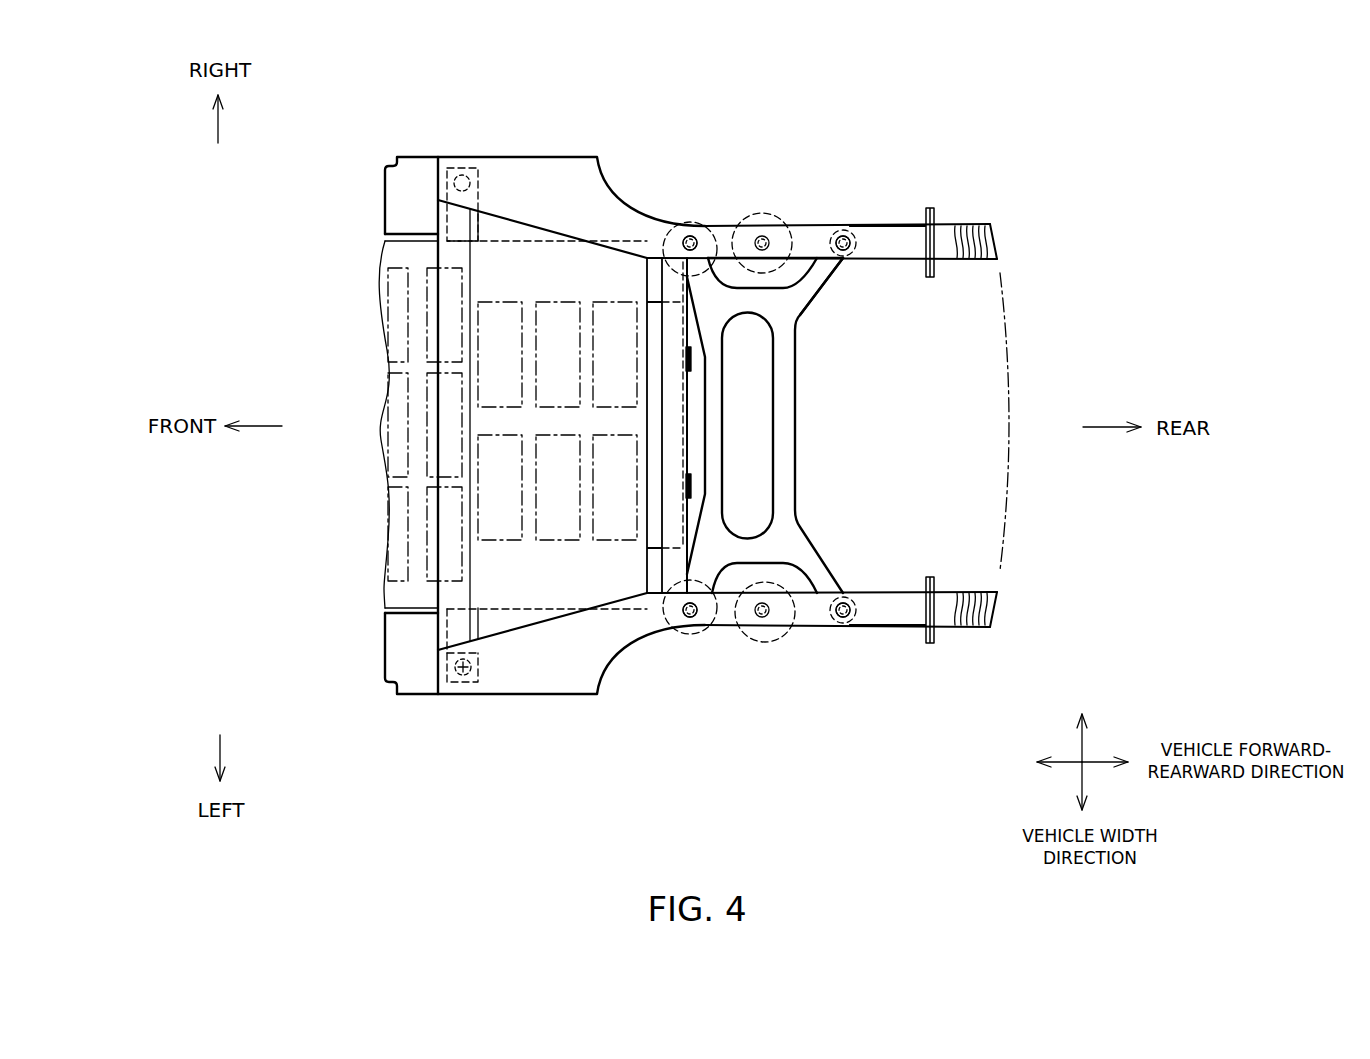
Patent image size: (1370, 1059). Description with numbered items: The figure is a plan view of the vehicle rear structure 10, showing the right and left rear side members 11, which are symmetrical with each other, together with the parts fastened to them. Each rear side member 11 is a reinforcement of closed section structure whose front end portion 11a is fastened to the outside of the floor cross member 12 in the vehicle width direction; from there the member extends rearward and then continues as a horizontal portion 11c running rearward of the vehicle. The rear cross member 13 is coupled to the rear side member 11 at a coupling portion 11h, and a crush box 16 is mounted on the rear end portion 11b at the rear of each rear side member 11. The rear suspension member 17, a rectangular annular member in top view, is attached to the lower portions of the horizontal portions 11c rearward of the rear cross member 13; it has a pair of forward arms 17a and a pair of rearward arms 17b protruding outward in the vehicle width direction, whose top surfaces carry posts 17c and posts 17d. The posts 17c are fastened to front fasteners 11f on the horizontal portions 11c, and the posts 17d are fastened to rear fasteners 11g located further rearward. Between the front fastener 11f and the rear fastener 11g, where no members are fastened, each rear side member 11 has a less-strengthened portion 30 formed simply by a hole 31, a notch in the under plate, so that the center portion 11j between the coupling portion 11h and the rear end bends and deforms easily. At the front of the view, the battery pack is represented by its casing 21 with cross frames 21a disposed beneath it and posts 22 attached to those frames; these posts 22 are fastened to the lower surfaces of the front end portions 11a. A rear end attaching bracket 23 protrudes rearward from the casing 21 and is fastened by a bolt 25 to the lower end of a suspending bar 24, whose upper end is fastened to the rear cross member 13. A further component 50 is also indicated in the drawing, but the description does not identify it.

The vehicle rear structure 10 is at (1058, 226).
The rear side member 11 is at (913, 226).
The front end portion 11a is at (488, 160).
The rear end portion 11b is at (980, 226).
The horizontal portion 11c is at (879, 222).
The center portion 11j is at (887, 425).
The front fastener 11f is at (690, 426).
The rear fastener 11g is at (843, 426).
The coupling portion 11h is at (672, 222).
The floor cross member 12 is at (437, 318).
The rear cross member 13 is at (653, 286).
The crush box 16 is at (994, 224).
The rear suspension member 17 is at (800, 396).
The forward arm 17a is at (736, 226).
The rearward arm 17b is at (833, 277).
The post 17c is at (707, 226).
The post 17d is at (849, 230).
The casing 21 is at (382, 596).
The cross frame 21a is at (458, 698).
The post 22 is at (445, 665).
The rear end attaching bracket 23 is at (646, 628).
The suspending bar 24 is at (690, 474).
The bolt 25 is at (692, 490).
The less-strengthened portion 30 is at (783, 220).
The hole 31 is at (820, 226).
The component region 50 is at (502, 545).